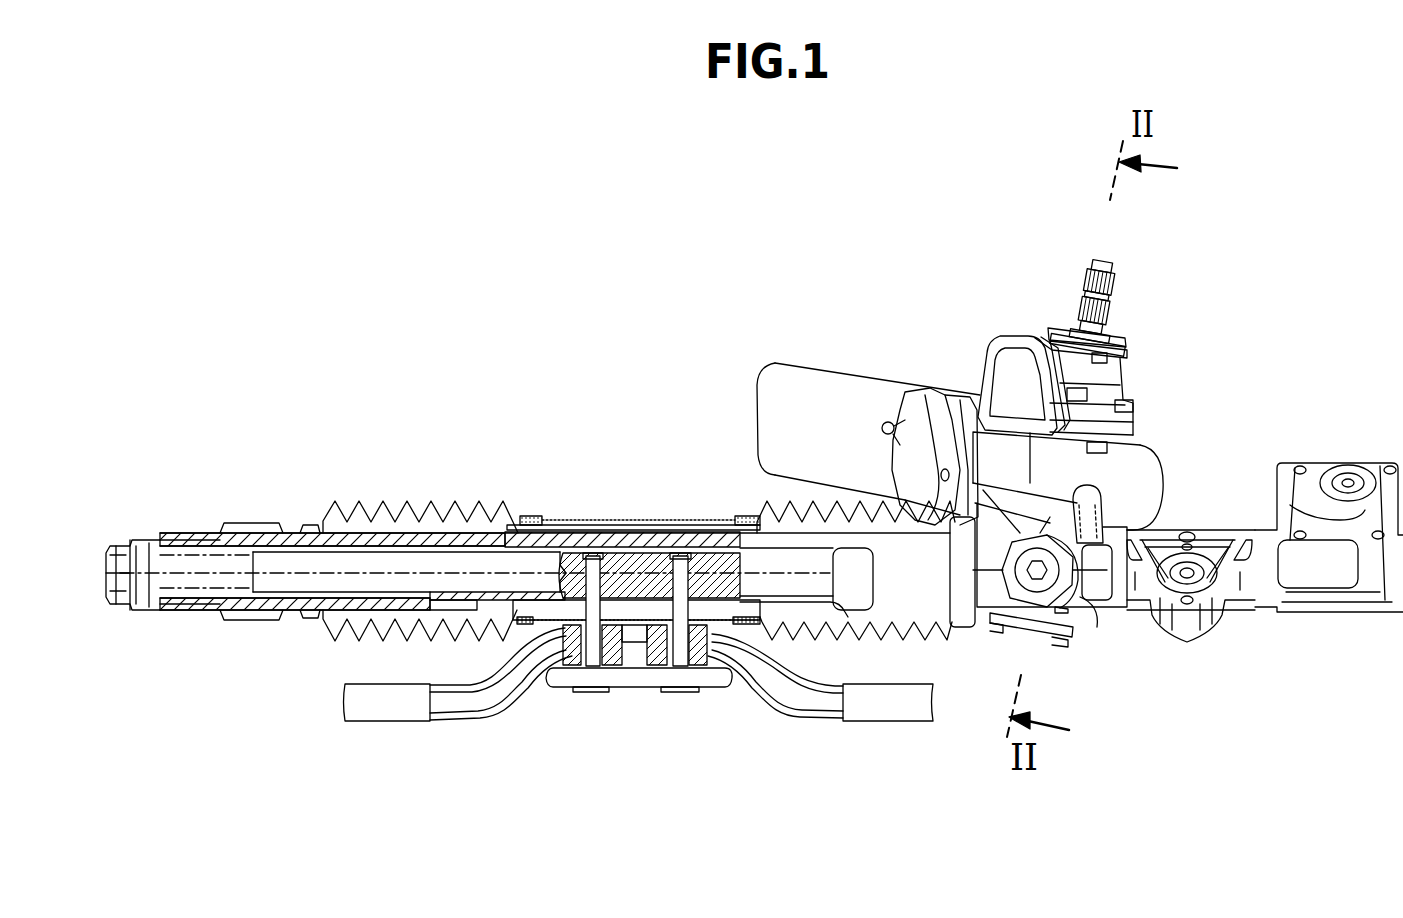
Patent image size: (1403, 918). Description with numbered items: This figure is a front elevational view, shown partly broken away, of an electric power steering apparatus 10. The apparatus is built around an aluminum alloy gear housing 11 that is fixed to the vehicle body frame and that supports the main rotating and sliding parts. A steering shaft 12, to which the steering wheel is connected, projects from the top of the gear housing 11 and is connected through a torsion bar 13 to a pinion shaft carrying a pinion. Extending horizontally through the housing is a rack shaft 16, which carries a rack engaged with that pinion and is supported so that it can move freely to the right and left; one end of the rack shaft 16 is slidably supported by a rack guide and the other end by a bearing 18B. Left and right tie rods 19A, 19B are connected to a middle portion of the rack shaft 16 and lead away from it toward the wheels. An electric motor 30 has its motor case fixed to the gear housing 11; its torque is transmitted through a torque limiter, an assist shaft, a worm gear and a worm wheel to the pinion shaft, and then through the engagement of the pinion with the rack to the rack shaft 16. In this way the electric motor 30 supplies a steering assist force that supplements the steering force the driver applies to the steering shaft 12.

The electric power steering apparatus 10 is at (575, 356).
The gear housing 11 is at (1105, 377).
The steering shaft 12 is at (1094, 322).
The torsion bar 13 is at (1105, 262).
The rack shaft 16 is at (714, 528).
The bearing 18B is at (435, 602).
The left tie rod 19A is at (400, 724).
The right tie rod 19B is at (896, 724).
The electric motor 30 is at (848, 385).